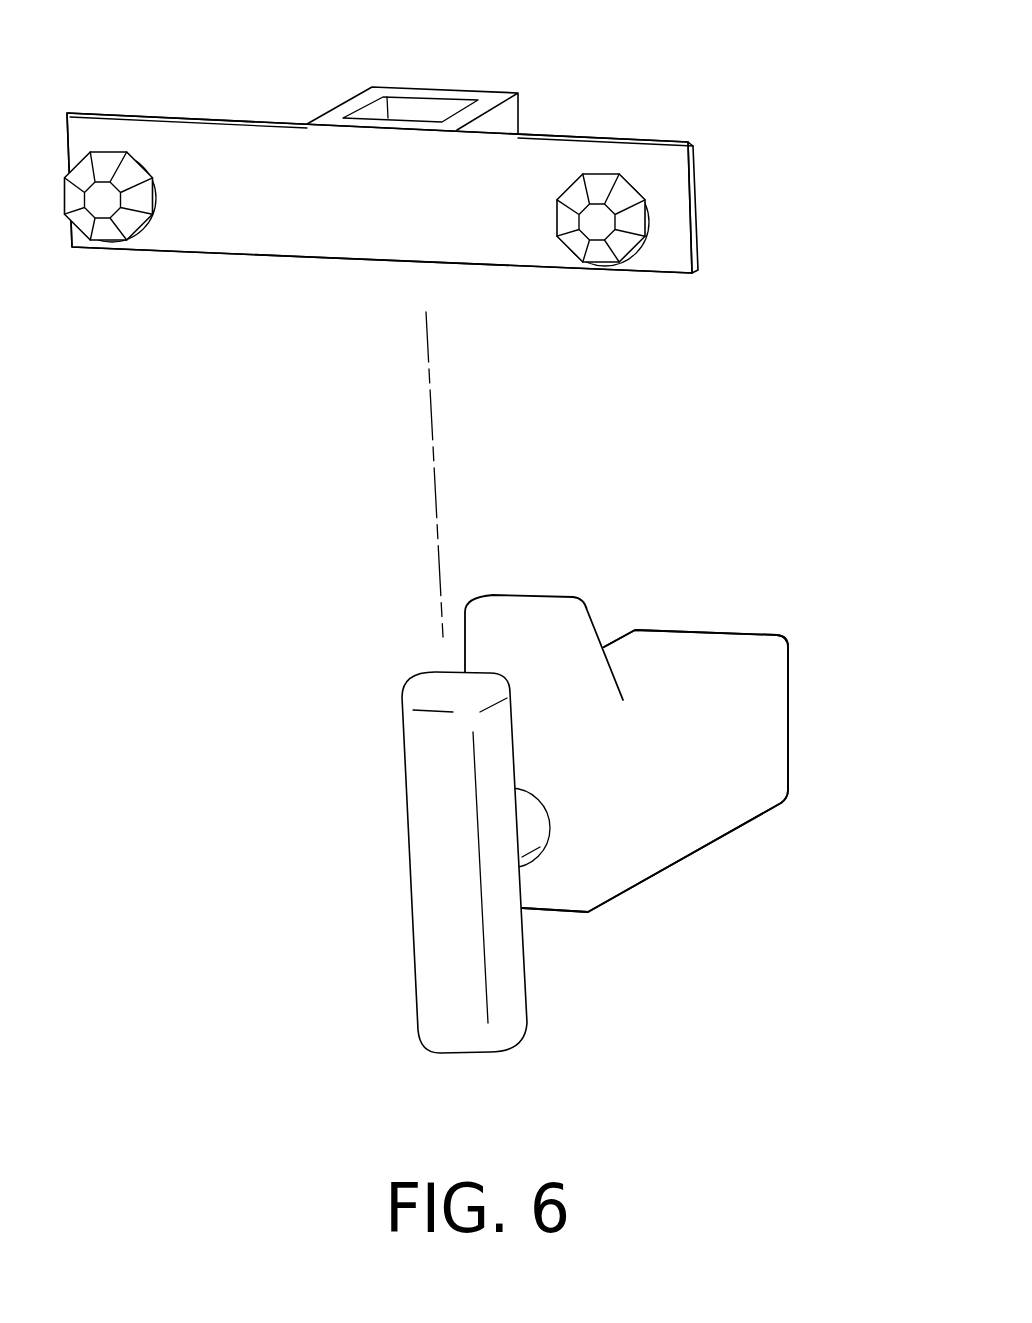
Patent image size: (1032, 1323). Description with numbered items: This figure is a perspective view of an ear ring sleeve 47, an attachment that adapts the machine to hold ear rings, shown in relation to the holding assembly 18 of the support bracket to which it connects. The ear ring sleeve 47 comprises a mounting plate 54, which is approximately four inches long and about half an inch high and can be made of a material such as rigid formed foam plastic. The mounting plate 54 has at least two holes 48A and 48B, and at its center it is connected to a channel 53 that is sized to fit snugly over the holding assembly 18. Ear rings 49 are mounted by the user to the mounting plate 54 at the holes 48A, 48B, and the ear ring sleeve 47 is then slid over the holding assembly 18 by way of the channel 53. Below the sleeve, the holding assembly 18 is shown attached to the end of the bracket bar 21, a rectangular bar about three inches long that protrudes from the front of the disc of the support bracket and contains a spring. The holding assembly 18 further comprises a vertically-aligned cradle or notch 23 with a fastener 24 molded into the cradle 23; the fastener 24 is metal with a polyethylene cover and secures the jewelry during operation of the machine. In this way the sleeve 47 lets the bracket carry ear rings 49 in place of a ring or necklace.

The holding assembly 18 is at (525, 832).
The bracket bar 21 is at (710, 735).
The cradle 23 is at (530, 700).
The fastener 24 is at (515, 613).
The ear ring sleeve 47 is at (695, 200).
The hole 48A is at (152, 165).
The hole 48B is at (643, 187).
The ear rings 49 is at (130, 222).
The channel 53 is at (428, 113).
The mounting plate 54 is at (252, 157).